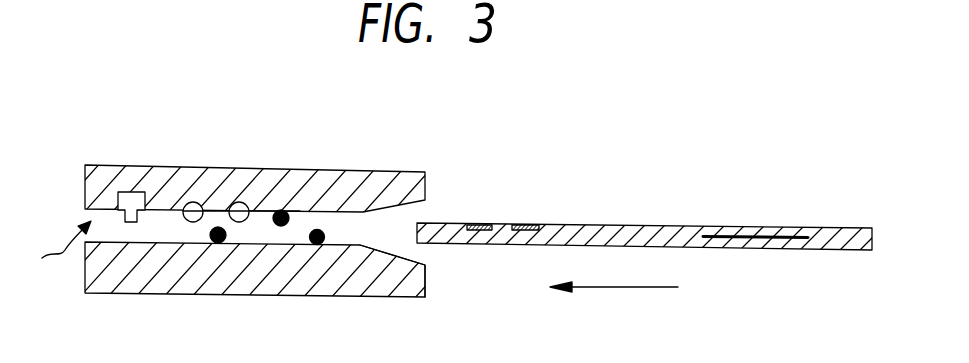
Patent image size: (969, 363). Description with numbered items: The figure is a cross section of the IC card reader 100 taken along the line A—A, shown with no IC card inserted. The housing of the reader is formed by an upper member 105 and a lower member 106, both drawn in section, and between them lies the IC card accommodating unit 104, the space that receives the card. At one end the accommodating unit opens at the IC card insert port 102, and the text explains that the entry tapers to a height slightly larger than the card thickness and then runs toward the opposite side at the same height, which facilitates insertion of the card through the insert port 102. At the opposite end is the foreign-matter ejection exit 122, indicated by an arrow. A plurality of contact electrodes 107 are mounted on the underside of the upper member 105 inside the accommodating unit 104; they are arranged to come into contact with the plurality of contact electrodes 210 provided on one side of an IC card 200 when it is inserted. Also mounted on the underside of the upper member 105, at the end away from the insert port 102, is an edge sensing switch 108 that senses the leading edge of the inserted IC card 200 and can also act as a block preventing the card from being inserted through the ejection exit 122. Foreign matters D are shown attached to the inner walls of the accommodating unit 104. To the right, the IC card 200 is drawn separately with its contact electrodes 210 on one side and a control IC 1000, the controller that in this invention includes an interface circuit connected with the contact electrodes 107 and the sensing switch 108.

The IC card reader 100 is at (398, 172).
The IC card insert port 102 is at (393, 244).
The IC card accommodating unit 104 is at (265, 233).
The upper member 105 is at (275, 180).
The lower member 106 is at (298, 268).
The contact electrodes 107 is at (238, 211).
The edge sensing switch 108 is at (133, 197).
The foreign-matter ejection exit 122 is at (54, 257).
The IC card 200 is at (602, 225).
The contact electrodes 210 is at (526, 224).
The control IC 1000 is at (760, 233).
The foreign matters D is at (319, 232).